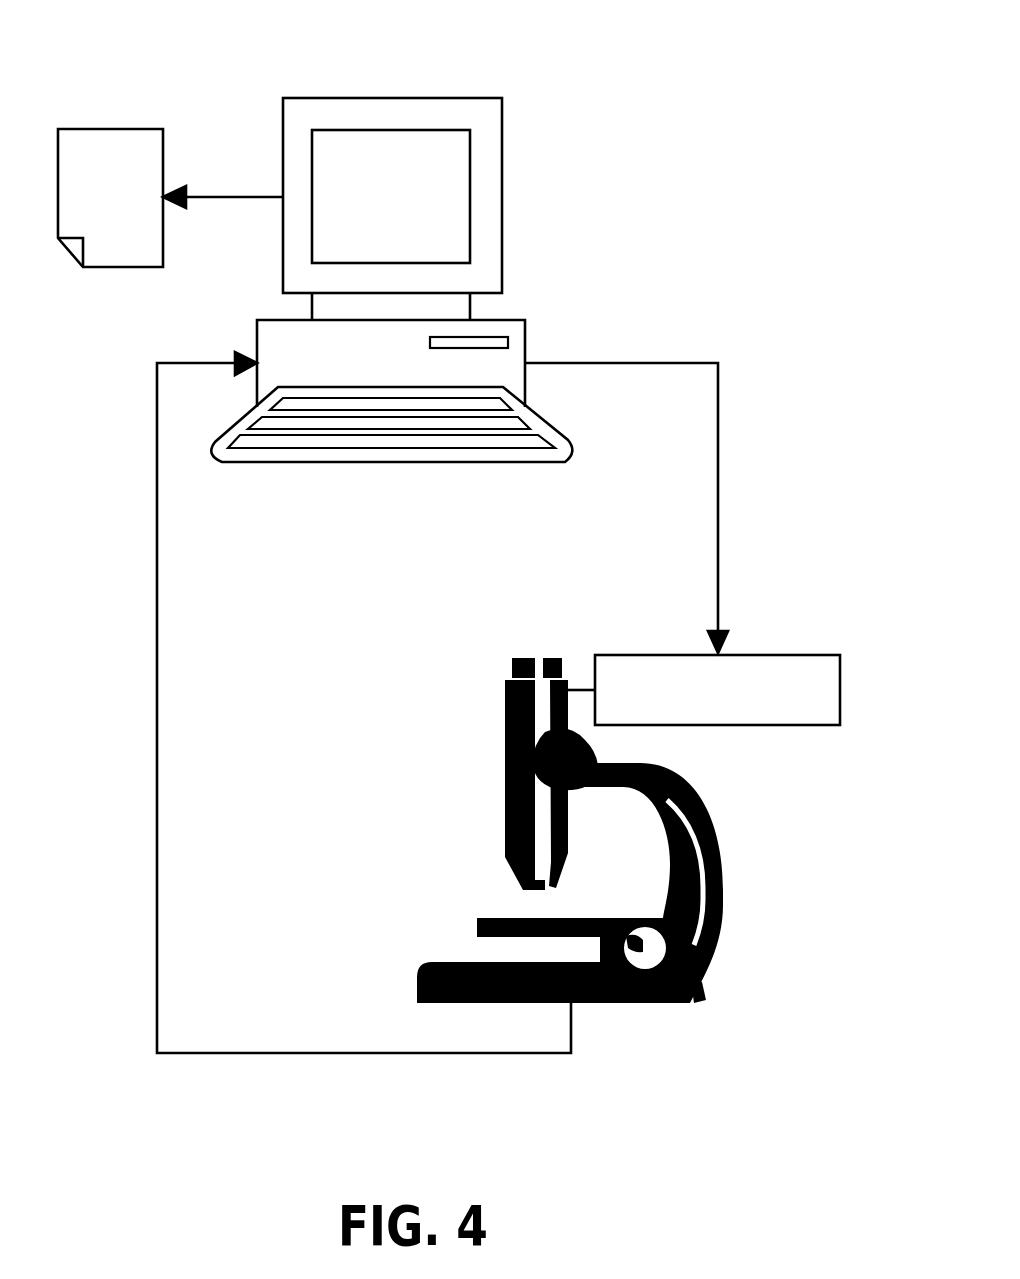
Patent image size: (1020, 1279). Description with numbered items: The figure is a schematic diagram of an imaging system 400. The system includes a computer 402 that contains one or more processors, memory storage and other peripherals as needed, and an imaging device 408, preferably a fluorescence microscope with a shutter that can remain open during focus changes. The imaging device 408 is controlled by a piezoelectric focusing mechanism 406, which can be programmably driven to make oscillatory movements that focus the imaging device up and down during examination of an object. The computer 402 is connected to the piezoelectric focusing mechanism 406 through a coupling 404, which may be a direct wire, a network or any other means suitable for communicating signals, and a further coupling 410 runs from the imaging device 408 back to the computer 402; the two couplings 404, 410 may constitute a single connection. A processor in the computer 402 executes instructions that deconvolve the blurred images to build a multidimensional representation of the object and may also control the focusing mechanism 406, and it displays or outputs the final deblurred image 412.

The imaging system 400 is at (417, 31).
The computer 402 is at (503, 180).
The coupling 404 is at (652, 363).
The piezoelectric focusing mechanism 406 is at (787, 653).
The imaging device 408 is at (725, 876).
The coupling 410 is at (208, 1051).
The final deblurred image 412 is at (90, 128).